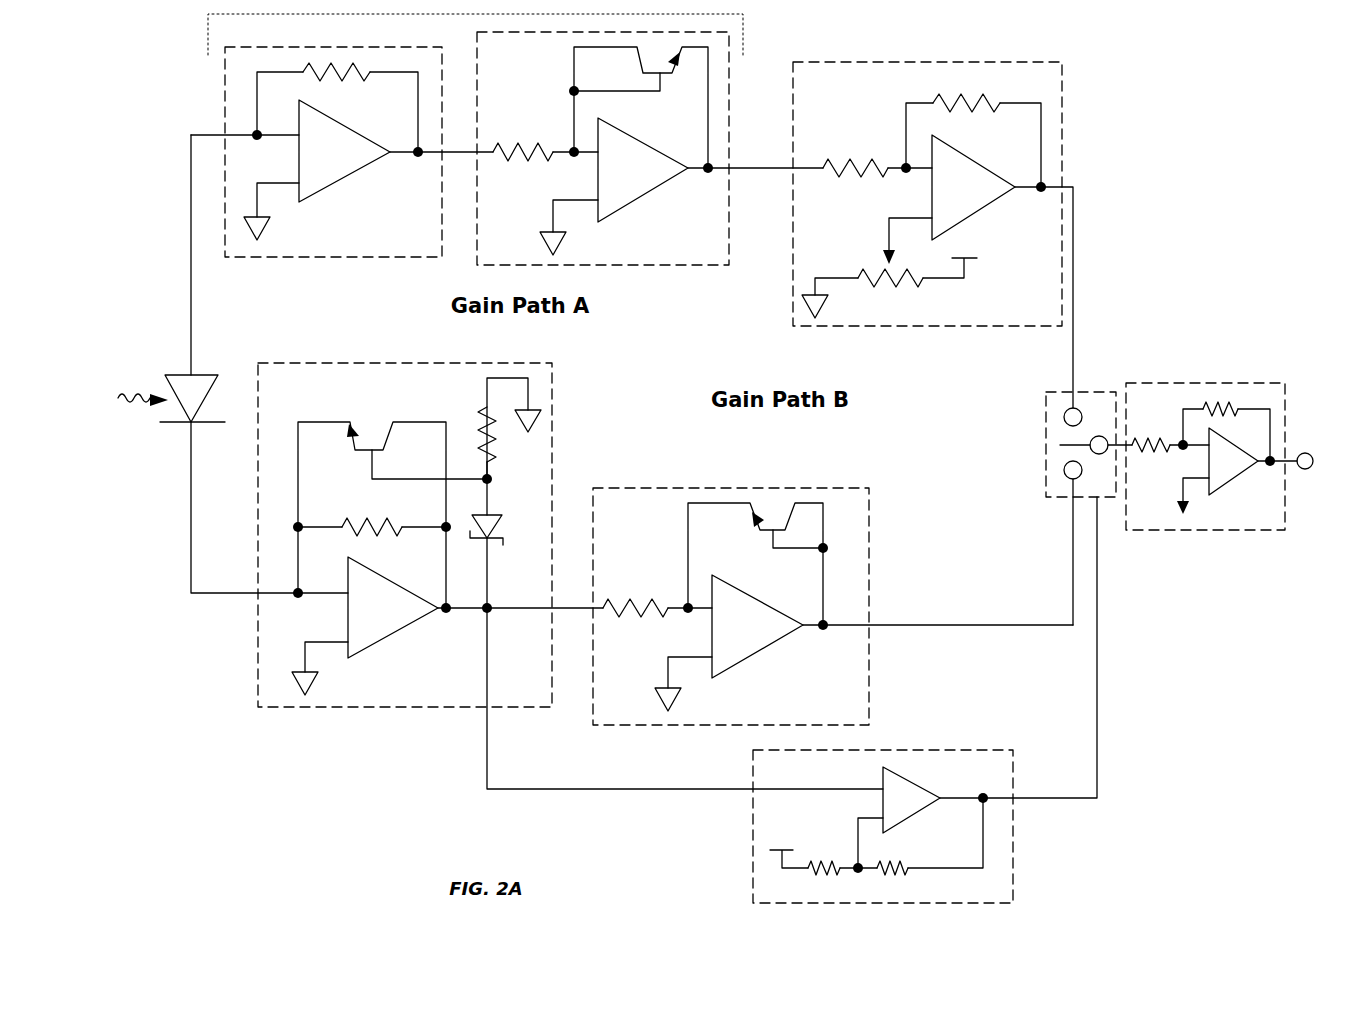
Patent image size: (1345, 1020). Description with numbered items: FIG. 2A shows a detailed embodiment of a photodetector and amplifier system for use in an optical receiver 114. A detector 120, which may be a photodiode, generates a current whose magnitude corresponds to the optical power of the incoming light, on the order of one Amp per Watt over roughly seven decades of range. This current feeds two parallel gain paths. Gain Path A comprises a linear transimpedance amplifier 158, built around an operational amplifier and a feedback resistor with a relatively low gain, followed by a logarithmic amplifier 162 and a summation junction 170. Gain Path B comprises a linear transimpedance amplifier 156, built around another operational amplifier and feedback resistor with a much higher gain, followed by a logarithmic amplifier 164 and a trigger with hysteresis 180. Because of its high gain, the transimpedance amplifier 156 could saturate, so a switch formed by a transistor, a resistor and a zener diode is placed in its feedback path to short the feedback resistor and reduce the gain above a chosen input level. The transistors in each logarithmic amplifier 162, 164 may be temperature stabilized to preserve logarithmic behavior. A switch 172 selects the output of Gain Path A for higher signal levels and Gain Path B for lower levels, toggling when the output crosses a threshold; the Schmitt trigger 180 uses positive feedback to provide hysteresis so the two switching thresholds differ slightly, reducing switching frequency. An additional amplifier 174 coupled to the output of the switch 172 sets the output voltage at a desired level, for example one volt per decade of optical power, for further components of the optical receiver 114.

The optical receiver 114 is at (352, 812).
The detector 120 is at (180, 373).
The linear transimpedance amplifier 156 is at (552, 418).
The linear transimpedance amplifier 158 is at (317, 257).
The logarithmic amplifier 162 is at (622, 265).
The logarithmic amplifier 164 is at (810, 488).
The summation junction 170 is at (1062, 123).
The switch 172 is at (1046, 478).
The additional amplifier 174 is at (1193, 383).
The trigger with hysteresis 180 is at (950, 750).